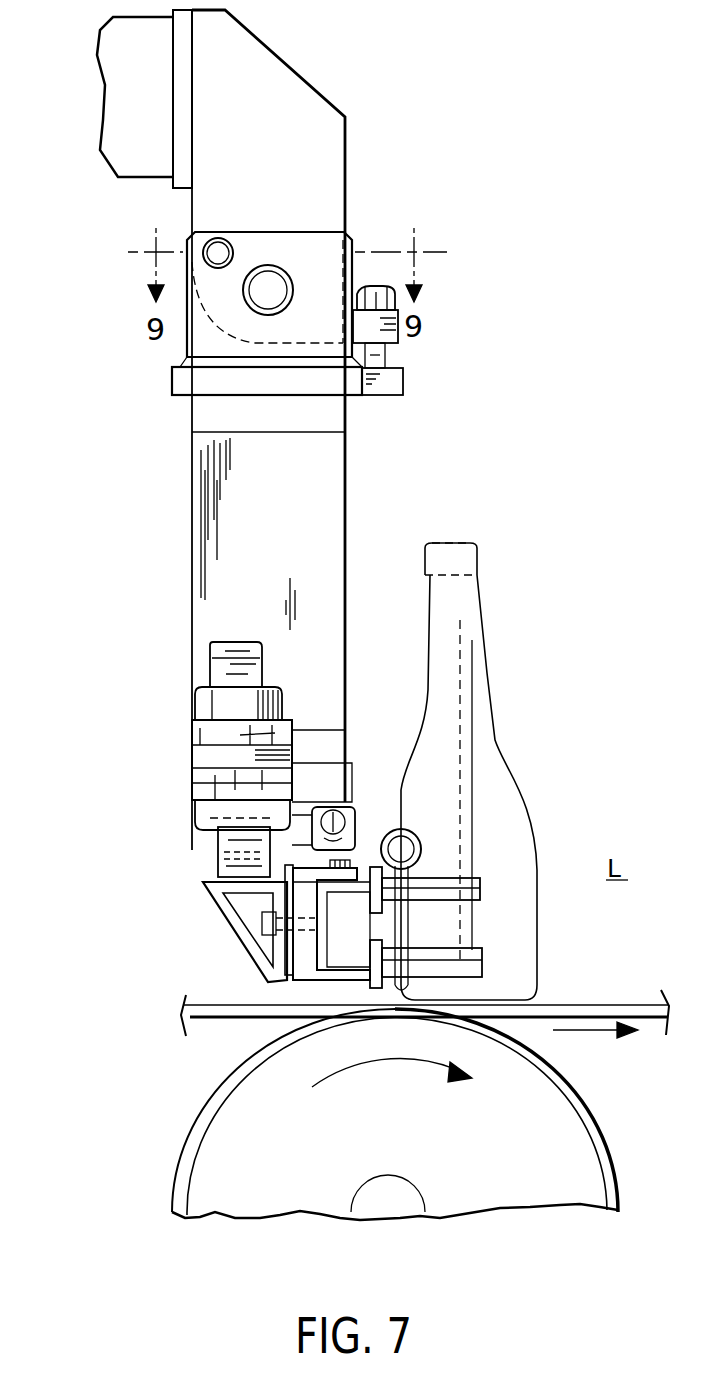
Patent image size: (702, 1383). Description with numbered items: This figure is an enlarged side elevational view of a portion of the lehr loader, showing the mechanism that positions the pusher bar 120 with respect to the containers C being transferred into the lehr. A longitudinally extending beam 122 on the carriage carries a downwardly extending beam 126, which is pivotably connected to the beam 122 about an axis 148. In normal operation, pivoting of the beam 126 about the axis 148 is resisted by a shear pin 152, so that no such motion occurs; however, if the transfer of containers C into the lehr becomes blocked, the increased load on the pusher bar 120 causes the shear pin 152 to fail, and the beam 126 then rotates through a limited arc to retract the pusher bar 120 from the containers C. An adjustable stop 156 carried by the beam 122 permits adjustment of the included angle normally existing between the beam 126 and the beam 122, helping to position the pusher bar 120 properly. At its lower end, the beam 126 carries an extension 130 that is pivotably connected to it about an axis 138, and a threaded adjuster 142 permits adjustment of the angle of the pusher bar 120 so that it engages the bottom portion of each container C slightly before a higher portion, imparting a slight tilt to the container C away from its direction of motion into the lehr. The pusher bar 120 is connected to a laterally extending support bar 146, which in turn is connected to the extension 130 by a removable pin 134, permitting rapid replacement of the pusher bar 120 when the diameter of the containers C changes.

The pusher bar 120 is at (478, 870).
The longitudinally extending beam 122 is at (108, 163).
The downwardly extending beam 126 is at (334, 476).
The extension 130 is at (218, 870).
The removable pin 134 is at (385, 860).
The axis 138 is at (338, 817).
The threaded adjuster 142 is at (205, 758).
The support bar 146 is at (235, 932).
The axis 148 is at (268, 296).
The shear pin 152 is at (224, 252).
The adjustable stop 156 is at (398, 333).
The container C is at (490, 676).